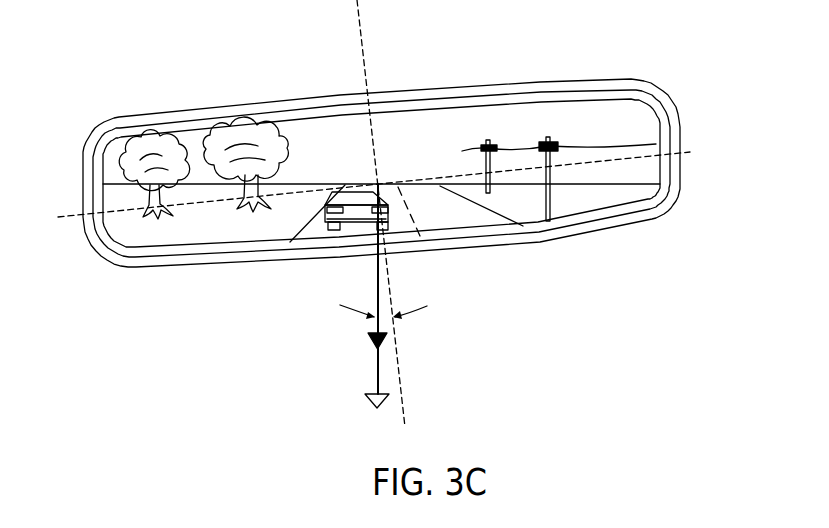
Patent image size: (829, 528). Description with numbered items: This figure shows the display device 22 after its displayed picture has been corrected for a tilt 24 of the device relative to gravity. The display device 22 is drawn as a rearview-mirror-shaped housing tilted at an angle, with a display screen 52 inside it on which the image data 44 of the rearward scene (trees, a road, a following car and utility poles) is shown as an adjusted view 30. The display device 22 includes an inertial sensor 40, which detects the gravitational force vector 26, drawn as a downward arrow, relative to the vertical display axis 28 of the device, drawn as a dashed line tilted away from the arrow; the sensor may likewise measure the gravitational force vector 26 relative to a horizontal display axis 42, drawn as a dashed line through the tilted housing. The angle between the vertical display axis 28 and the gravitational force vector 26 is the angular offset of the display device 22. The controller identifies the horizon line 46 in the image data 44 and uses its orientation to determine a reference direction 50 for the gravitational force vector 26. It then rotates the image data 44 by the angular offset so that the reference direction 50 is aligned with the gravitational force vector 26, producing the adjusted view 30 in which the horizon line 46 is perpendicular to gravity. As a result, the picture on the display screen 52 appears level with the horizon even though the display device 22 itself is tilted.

The display device 22 is at (592, 90).
The tilt 24 is at (412, 313).
The gravitational force vector 26 is at (375, 383).
The vertical display axis 28 is at (397, 357).
The adjusted view 30 is at (381, 158).
The image data 44 is at (381, 158).
The inertial sensor 40 is at (370, 142).
The horizontal display axis 42 is at (680, 152).
The horizon line 46 is at (608, 185).
The reference direction 50 is at (380, 296).
The display screen 52 is at (115, 160).